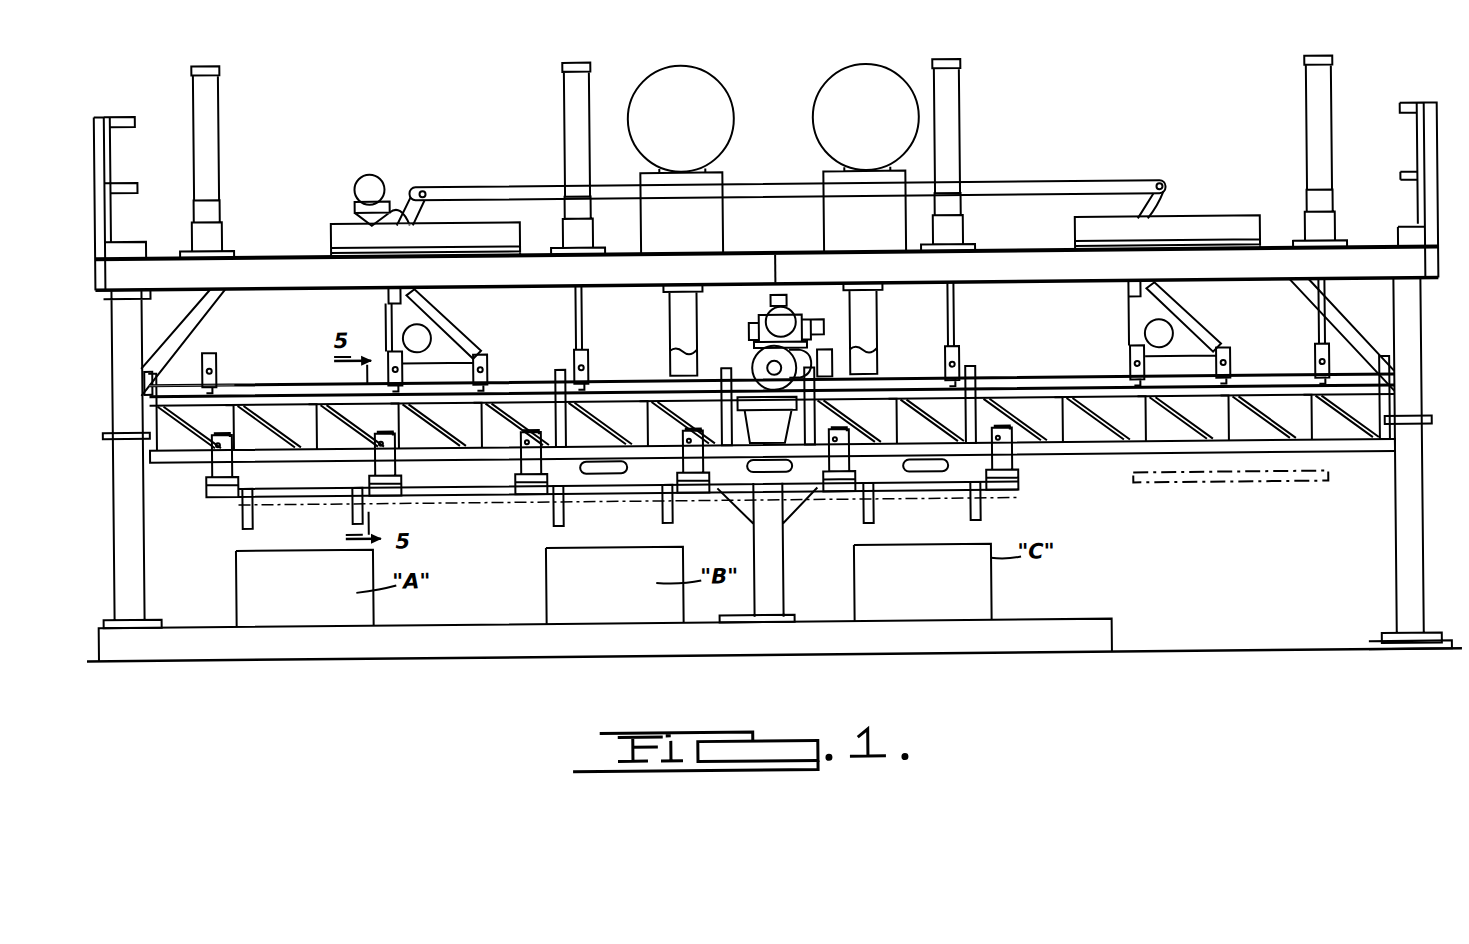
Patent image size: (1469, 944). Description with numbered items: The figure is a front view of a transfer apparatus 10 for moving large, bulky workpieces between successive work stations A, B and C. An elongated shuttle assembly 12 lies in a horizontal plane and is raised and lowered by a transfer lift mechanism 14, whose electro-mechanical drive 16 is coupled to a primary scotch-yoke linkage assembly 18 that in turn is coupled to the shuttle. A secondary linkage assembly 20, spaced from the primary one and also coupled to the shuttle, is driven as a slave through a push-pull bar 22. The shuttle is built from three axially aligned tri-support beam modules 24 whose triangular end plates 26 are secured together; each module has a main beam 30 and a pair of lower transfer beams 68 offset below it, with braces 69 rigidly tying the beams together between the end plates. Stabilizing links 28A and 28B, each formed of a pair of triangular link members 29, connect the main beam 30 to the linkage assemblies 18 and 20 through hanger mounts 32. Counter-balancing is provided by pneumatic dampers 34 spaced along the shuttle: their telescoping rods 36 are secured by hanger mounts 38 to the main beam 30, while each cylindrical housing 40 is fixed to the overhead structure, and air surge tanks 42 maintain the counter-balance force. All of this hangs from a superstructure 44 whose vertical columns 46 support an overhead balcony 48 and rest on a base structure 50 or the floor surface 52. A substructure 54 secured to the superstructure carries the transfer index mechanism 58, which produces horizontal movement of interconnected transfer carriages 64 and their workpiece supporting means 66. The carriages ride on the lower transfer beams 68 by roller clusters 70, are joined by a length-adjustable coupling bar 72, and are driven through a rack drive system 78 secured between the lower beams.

The transfer apparatus 10 is at (1166, 84).
The shuttle assembly 12 is at (1046, 356).
The transfer lift mechanism 14 is at (416, 158).
The electro-mechanical drive 16 is at (372, 168).
The primary linkage assembly 18 is at (442, 207).
The secondary linkage assembly 20 is at (1187, 200).
The push-pull bar 22 is at (1040, 184).
The tri-support beam modules 24 is at (273, 377).
The triangular end plates 26 is at (556, 372).
The stabilizing link 28A is at (448, 330).
The stabilizing link 28B is at (1229, 332).
The triangular link members 29 is at (396, 322).
The main beam 30 is at (232, 380).
The hanger mounts 32 is at (483, 359).
The pneumatic dampers 34 is at (228, 130).
The telescopically movable rods 36 is at (584, 316).
The hanger mounts 38 is at (588, 355).
The cylindrical housing 40 is at (222, 166).
The air surge tanks 42 is at (736, 110).
The superstructure 44 is at (1443, 352).
The vertical columns 46 is at (1406, 510).
The overhead balcony 48 is at (1008, 252).
The base structure 50 is at (1063, 622).
The floor surface 52 is at (1225, 654).
The substructure 54 is at (886, 336).
The transfer index mechanism 58 is at (760, 322).
The transfer carriages 64 is at (238, 506).
The workpiece supporting means 66 is at (467, 490).
The lower transfer beams 68 is at (175, 452).
The braces 69 is at (1068, 442).
The roller clusters 70 is at (372, 462).
The coupling bar 72 is at (468, 496).
The rack drive system 78 is at (764, 428).